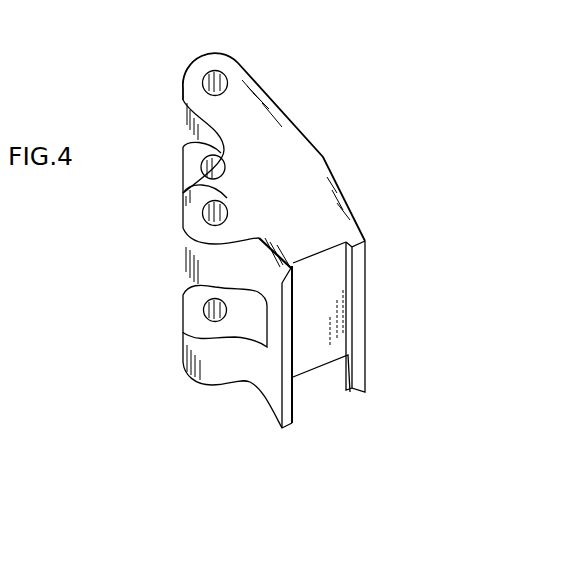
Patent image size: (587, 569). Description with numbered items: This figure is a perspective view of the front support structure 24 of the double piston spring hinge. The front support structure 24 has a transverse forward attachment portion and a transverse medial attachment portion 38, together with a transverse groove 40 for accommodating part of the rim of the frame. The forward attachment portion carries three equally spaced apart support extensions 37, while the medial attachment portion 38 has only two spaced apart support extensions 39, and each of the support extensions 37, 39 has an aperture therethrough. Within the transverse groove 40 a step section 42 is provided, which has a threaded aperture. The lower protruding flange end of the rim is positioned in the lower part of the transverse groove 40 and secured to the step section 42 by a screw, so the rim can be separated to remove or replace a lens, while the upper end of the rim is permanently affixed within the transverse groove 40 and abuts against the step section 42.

The front support structure 24 is at (317, 49).
The support extensions 37 is at (195, 73).
The transverse medial attachment portion 38 is at (178, 360).
The support extensions 39 is at (190, 347).
The transverse groove 40 is at (350, 313).
The step section 42 is at (318, 352).